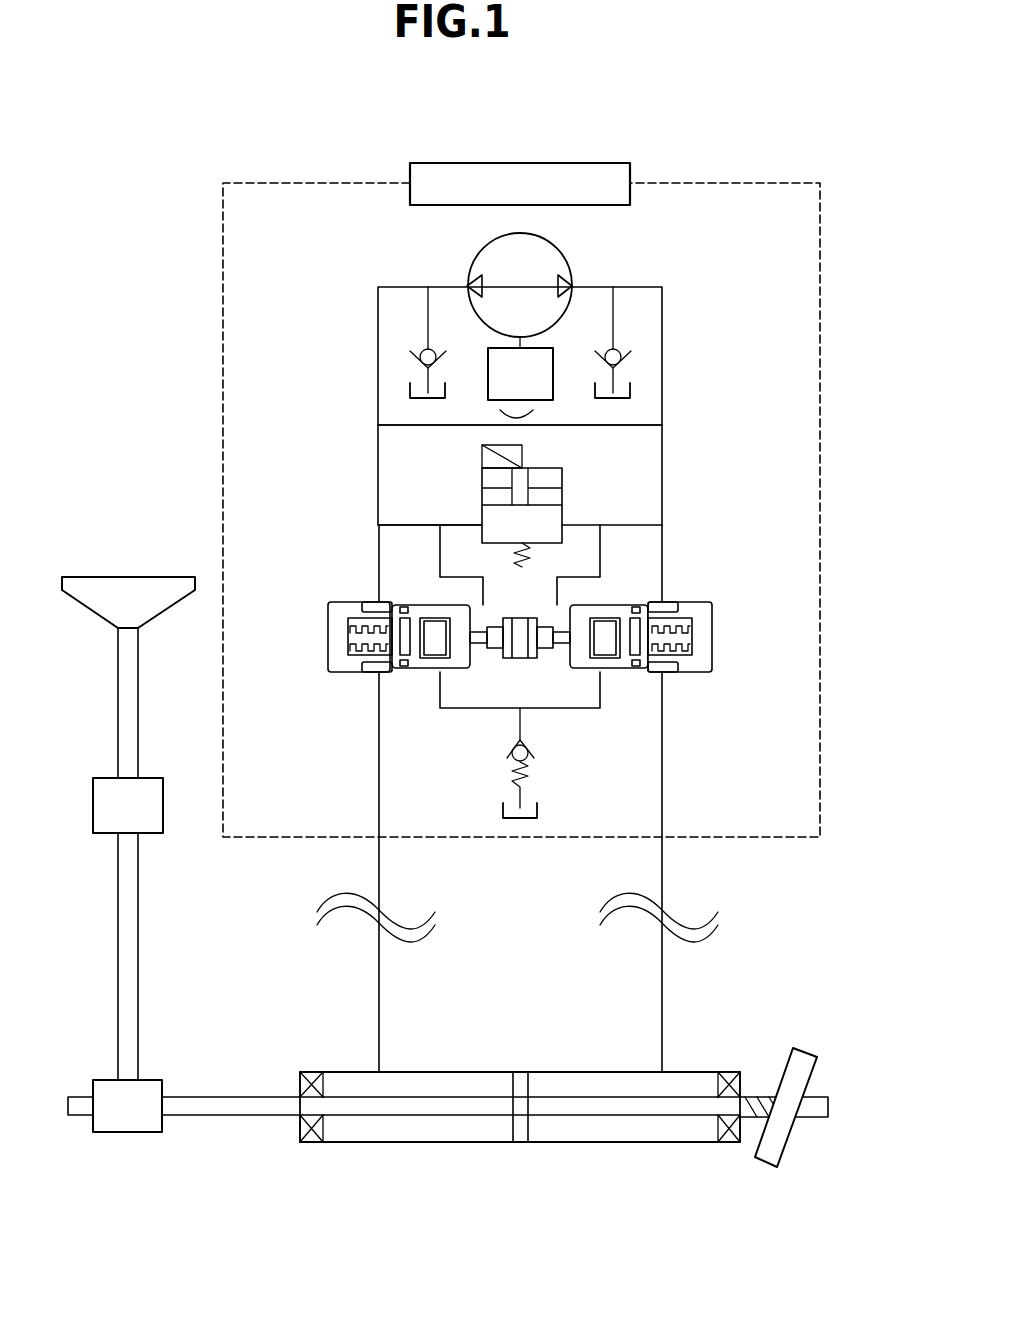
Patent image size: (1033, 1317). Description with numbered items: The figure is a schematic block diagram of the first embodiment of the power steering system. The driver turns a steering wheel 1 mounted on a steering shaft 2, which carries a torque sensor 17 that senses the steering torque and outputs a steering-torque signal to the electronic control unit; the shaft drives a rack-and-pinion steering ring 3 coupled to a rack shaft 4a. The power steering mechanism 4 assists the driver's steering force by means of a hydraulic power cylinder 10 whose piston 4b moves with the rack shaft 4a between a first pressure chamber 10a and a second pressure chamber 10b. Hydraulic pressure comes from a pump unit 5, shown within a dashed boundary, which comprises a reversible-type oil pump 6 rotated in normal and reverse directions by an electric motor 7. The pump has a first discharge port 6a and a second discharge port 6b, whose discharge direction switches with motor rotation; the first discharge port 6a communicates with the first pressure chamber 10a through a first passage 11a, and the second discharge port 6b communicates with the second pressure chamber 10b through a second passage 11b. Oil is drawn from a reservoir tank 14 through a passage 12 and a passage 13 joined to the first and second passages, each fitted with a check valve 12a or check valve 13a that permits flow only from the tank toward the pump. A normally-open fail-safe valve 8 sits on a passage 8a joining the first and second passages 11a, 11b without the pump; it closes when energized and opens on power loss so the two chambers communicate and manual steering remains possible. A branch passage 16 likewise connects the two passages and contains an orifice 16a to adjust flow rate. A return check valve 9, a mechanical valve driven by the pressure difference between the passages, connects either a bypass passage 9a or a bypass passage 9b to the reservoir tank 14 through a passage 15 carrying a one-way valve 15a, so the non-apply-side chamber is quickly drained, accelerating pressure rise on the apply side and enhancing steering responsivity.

The steering wheel 1 is at (130, 577).
The steering shaft 2 is at (118, 735).
The rack-and-pinion steering ring 3 is at (105, 1080).
The power steering mechanism 4 is at (697, 1060).
The rack shaft 4a is at (232, 1095).
The piston 4b is at (520, 1078).
The pump unit 5 is at (715, 183).
The reversible-type oil pump 6 is at (562, 252).
The first discharge port 6a is at (467, 287).
The second discharge port 6b is at (573, 285).
The electric motor 7 is at (553, 357).
The fail-safe valve 8 is at (563, 475).
The passage 8a is at (458, 523).
The return check valve 9 is at (690, 602).
The bypass passage 9a is at (440, 574).
The bypass passage 9b is at (600, 574).
The hydraulic power cylinder 10 is at (695, 1152).
The first pressure chamber 10a is at (422, 1133).
The second pressure chamber 10b is at (625, 1130).
The first passage 11a is at (378, 473).
The second passage 11b is at (662, 450).
The passage 12 is at (427, 302).
The check valve 12a is at (434, 352).
The passage 13 is at (614, 293).
The check valve 13a is at (600, 352).
The reservoir tank 14 is at (428, 402).
The passage 15 is at (478, 710).
The one-way valve 15a is at (533, 753).
The branch passage 16 is at (432, 428).
The orifice 16a is at (500, 438).
The torque sensor 17 is at (163, 797).